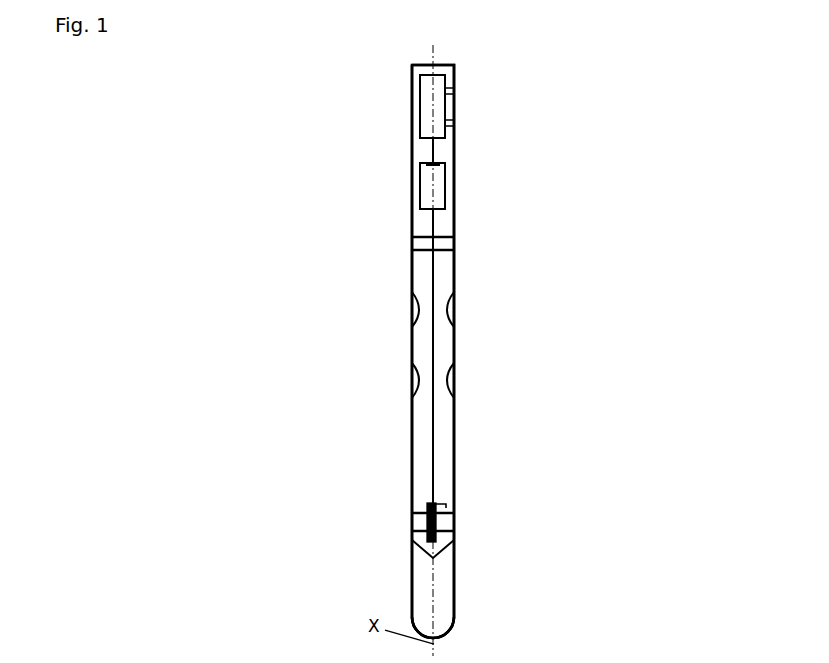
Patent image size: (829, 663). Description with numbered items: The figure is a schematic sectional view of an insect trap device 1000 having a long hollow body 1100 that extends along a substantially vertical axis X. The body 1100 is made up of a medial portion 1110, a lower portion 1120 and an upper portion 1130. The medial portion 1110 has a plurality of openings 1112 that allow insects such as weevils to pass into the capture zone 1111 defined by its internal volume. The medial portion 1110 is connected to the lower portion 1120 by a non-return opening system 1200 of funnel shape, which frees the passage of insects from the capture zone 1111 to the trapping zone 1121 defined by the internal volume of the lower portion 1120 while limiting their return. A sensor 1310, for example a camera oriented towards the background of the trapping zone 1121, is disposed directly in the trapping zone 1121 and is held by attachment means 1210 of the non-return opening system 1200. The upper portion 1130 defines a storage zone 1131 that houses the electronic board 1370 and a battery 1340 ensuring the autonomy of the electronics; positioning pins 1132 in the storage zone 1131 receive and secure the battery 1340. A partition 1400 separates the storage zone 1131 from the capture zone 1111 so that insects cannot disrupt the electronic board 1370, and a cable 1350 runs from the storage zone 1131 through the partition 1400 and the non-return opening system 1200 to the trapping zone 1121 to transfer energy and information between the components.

The insect trap device 1000 is at (218, 191).
The hollow body 1100 is at (548, 607).
The medial portion 1110 is at (456, 432).
The capture zone 1111 is at (410, 438).
The openings 1112 is at (424, 310).
The lower portion 1120 is at (456, 578).
The trapping zone 1121 is at (410, 568).
The upper portion 1130 is at (456, 150).
The storage zone 1131 is at (410, 228).
The positioning pins 1132 is at (456, 92).
The non-return opening system 1200 is at (410, 549).
The attachment means 1210 is at (456, 522).
The sensor 1310 is at (425, 521).
The battery 1340 is at (420, 105).
The cable 1350 is at (430, 418).
The electronic board 1370 is at (420, 187).
The partition 1400 is at (410, 248).